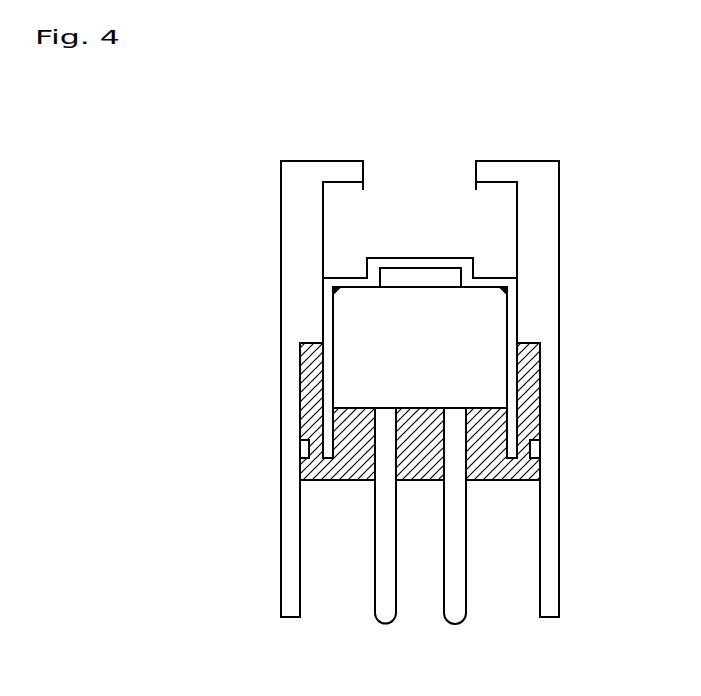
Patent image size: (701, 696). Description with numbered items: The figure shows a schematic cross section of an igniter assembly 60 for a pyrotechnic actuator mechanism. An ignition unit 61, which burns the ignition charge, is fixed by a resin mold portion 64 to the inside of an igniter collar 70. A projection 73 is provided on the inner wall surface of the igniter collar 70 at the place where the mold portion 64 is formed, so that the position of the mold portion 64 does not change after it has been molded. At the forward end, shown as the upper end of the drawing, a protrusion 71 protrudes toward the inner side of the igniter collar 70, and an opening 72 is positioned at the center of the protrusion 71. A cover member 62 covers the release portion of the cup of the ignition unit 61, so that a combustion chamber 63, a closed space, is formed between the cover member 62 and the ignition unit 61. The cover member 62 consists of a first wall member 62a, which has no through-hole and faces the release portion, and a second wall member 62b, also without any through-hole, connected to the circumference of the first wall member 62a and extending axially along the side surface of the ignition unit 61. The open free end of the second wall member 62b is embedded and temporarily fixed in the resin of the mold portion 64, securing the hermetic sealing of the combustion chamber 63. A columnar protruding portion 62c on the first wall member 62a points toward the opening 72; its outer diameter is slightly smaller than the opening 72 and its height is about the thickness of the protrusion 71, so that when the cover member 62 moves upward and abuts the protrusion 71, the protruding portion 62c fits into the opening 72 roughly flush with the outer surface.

The igniter assembly 60 is at (621, 252).
The ignition unit 61 is at (484, 316).
The cover member 62 is at (478, 268).
The first wall member 62a is at (333, 277).
The second wall member 62b is at (333, 338).
The protruding portion 62c is at (428, 257).
The combustion chamber 63 is at (437, 277).
The mold portion 64 is at (537, 465).
The igniter collar 70 is at (547, 541).
The protrusion 71 is at (350, 216).
The opening 72 is at (413, 178).
The projection 73 is at (307, 450).